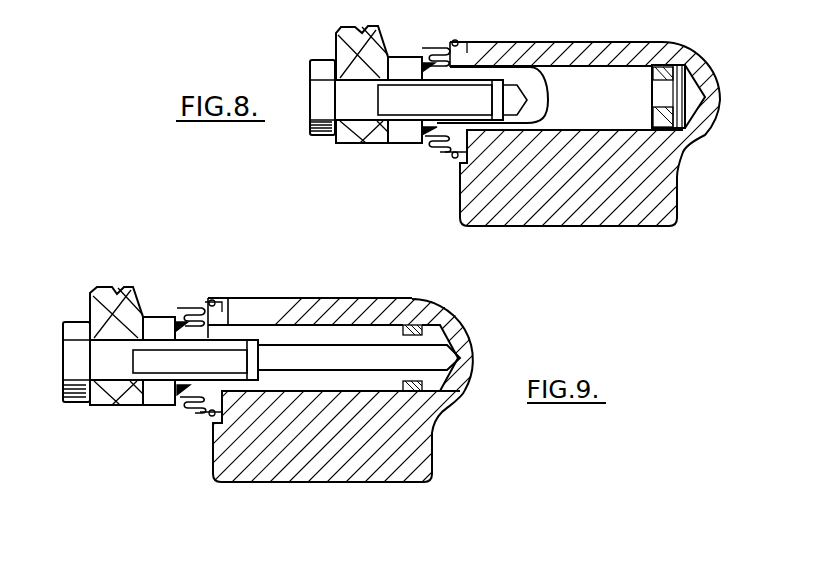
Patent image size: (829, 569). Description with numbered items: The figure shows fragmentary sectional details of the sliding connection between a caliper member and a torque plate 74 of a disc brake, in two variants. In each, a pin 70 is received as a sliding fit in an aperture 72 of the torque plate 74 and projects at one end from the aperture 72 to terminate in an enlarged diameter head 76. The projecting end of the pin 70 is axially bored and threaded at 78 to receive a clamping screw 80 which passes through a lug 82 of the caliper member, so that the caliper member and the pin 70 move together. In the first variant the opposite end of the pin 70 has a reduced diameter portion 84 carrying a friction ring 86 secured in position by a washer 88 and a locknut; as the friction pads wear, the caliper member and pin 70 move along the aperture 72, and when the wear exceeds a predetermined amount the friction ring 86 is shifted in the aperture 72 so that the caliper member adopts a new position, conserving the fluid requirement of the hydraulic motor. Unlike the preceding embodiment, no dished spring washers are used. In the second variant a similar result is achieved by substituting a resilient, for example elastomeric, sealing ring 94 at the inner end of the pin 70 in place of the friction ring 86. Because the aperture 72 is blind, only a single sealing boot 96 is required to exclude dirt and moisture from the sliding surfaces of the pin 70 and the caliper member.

In FIG. 8, the pin 70 is at (555, 118).
In FIG. 9, the pin 70 is at (288, 383).
In FIG. 8, the aperture 72 is at (571, 64).
In FIG. 9, the aperture 72 is at (303, 325).
In FIG. 8, the torque plate 74 is at (600, 215).
In FIG. 9, the torque plate 74 is at (372, 463).
In FIG. 8, the enlarged diameter head 76 is at (410, 58).
In FIG. 9, the enlarged diameter head 76 is at (162, 320).
In FIG. 8, the axial bore and thread 78 is at (482, 79).
In FIG. 8, the clamping screw 80 is at (362, 108).
In FIG. 9, the clamping screw 80 is at (113, 363).
In FIG. 8, the lug 82 is at (376, 135).
In FIG. 9, the lug 82 is at (128, 400).
In FIG. 8, the reduced diameter portion 84 is at (657, 93).
In FIG. 8, the friction ring 86 is at (662, 70).
In FIG. 8, the washer 88 is at (683, 137).
In FIG. 9, the resilient sealing ring 94 is at (407, 325).
In FIG. 8, the sealing boot 96 is at (445, 47).
In FIG. 9, the sealing boot 96 is at (197, 305).